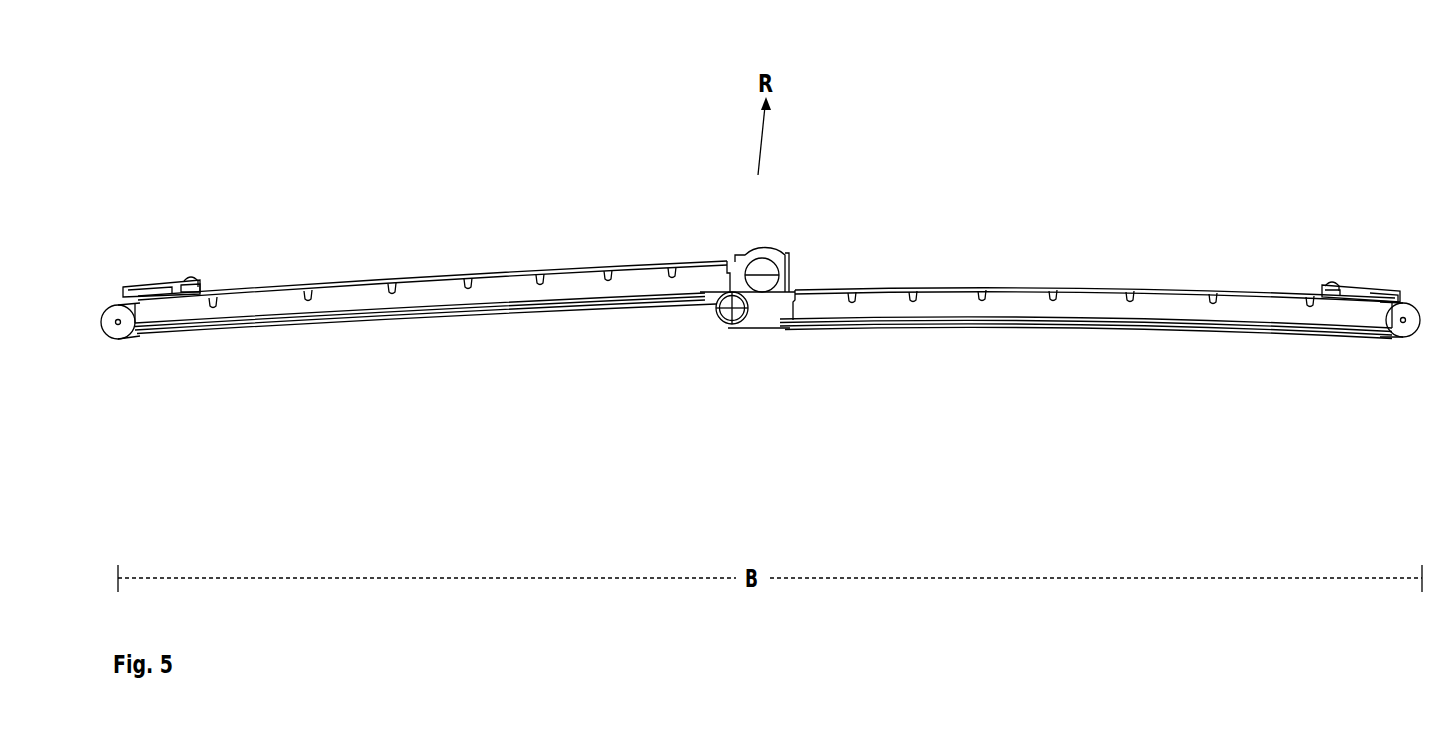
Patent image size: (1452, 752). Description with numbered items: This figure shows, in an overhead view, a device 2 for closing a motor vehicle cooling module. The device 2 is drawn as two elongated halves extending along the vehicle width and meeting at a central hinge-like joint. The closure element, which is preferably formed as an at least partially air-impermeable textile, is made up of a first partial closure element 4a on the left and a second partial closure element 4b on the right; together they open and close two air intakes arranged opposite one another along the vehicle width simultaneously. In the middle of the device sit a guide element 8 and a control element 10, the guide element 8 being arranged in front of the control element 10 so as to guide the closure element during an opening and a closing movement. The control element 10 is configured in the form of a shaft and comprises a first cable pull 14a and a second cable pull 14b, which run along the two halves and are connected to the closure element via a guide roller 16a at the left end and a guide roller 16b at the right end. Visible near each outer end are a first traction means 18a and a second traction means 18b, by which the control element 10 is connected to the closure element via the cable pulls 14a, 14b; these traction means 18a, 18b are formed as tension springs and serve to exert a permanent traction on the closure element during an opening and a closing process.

The device 2 is at (1184, 473).
The first partial closure element 4a is at (355, 284).
The second partial closure element 4b is at (1110, 288).
The guide element 8 is at (812, 228).
The control element 10 is at (704, 339).
The first cable pull 14a is at (400, 320).
The second cable pull 14b is at (1070, 328).
The guide roller 16a is at (117, 342).
The guide roller 16b is at (1401, 304).
The first traction means 18a is at (145, 287).
The second traction means 18b is at (1366, 283).